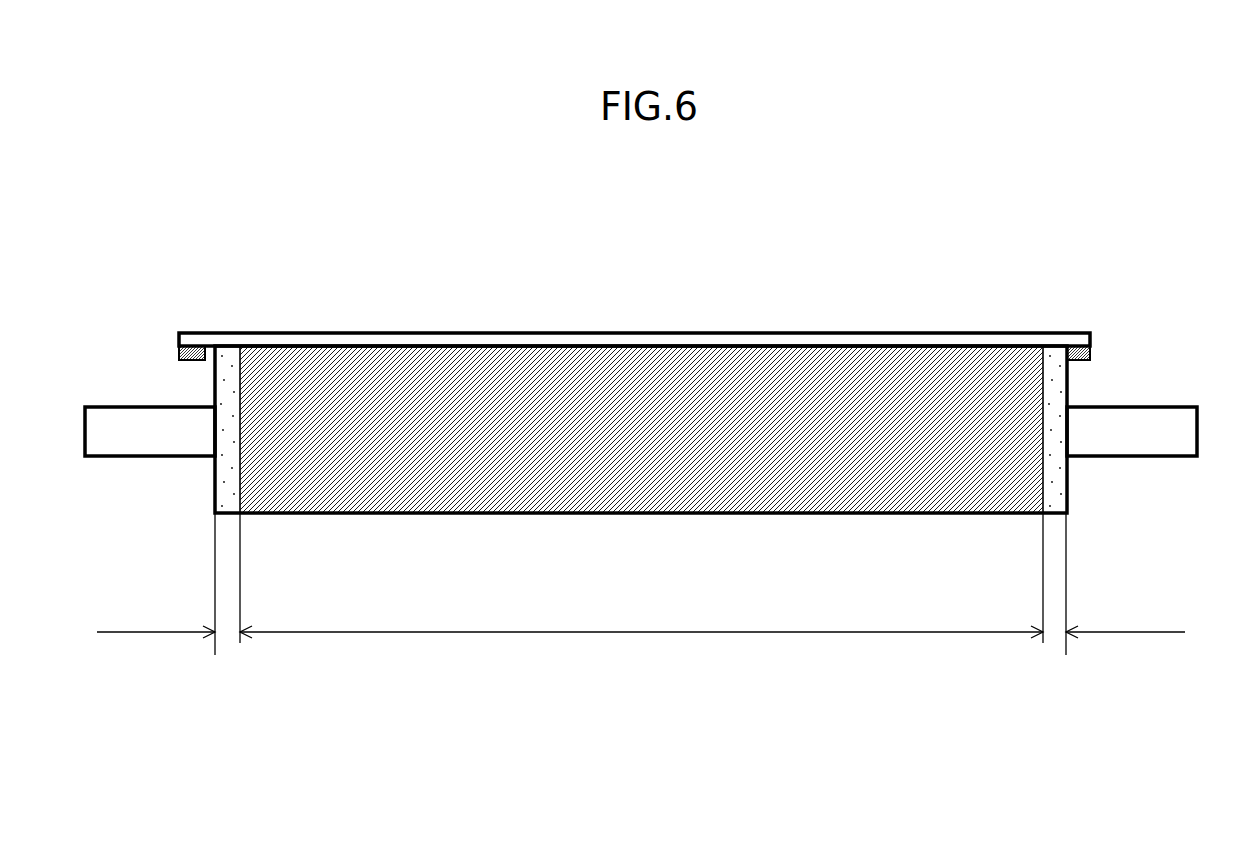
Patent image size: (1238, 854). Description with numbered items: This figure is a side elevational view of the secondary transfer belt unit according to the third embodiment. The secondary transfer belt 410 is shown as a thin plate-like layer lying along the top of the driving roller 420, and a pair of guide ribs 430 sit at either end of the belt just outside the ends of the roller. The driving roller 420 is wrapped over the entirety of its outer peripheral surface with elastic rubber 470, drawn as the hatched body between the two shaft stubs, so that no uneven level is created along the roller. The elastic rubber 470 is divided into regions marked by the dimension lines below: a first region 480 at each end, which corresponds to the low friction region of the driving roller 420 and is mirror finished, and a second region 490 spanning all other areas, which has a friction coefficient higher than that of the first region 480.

The secondary transfer belt 410 is at (636, 341).
The driving roller 420 is at (1067, 492).
The guide ribs 430 is at (179, 350).
The elastic rubber 470 is at (638, 497).
The first region 480 is at (152, 632).
The second region 490 is at (635, 632).